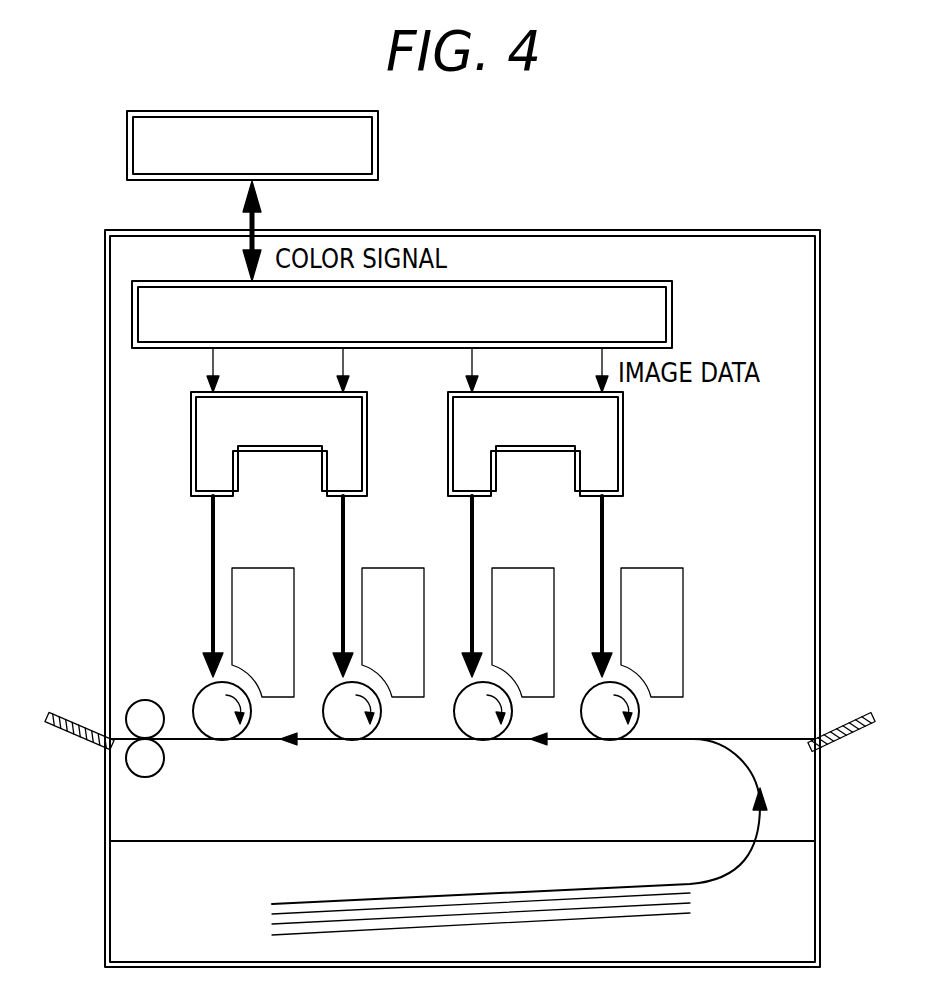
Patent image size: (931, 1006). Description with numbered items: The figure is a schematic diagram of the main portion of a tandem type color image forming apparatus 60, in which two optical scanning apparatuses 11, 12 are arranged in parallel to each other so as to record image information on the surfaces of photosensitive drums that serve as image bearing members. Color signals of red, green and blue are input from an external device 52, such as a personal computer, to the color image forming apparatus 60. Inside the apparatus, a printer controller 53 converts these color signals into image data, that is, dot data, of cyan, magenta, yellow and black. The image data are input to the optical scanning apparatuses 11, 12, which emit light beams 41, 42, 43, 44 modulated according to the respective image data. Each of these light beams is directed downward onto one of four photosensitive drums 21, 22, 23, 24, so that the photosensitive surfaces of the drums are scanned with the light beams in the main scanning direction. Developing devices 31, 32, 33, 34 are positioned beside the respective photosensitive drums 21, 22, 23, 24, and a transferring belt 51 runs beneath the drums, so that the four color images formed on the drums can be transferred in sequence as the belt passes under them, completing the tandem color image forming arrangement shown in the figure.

The external device 52 is at (378, 131).
The color image forming apparatus 60 is at (732, 230).
The printer controller 53 is at (672, 310).
The optical scanning apparatus 11 is at (191, 438).
The optical scanning apparatus 12 is at (448, 438).
The developing device 31 is at (268, 577).
The developing device 32 is at (389, 577).
The developing device 33 is at (524, 577).
The developing device 34 is at (651, 577).
The light beam 41 is at (213, 613).
The light beam 42 is at (343, 637).
The light beam 43 is at (472, 637).
The light beam 44 is at (602, 637).
The photosensitive drum 21 is at (222, 732).
The photosensitive drum 22 is at (353, 732).
The photosensitive drum 23 is at (483, 732).
The photosensitive drum 24 is at (610, 732).
The transferring belt 51 is at (747, 762).